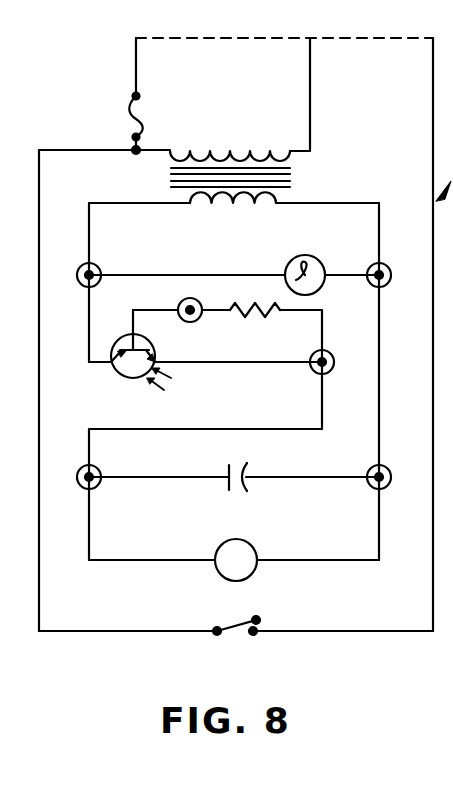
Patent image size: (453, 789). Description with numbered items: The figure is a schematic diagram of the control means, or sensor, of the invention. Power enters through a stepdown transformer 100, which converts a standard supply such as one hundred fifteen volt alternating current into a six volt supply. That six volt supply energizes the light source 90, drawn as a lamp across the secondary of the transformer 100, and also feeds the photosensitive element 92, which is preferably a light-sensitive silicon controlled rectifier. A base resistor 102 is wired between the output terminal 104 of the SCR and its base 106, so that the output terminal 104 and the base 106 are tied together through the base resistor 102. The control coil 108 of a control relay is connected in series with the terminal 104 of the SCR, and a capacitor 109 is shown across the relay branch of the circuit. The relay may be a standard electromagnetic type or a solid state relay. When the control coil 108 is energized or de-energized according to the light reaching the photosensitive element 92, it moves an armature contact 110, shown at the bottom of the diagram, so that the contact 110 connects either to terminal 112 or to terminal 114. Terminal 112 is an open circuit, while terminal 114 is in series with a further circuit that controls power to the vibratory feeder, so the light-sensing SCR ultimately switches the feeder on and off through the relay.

The light source 90 is at (316, 264).
The photosensitive element 92 is at (120, 375).
The stepdown transformer 100 is at (234, 153).
The base resistor 102 is at (228, 312).
The output terminal 104 is at (252, 357).
The base 106 is at (147, 315).
The control coil 108 is at (252, 551).
The capacitor 109 is at (227, 487).
The armature contact 110 is at (218, 636).
The terminal 112 is at (258, 617).
The terminal 114 is at (259, 636).